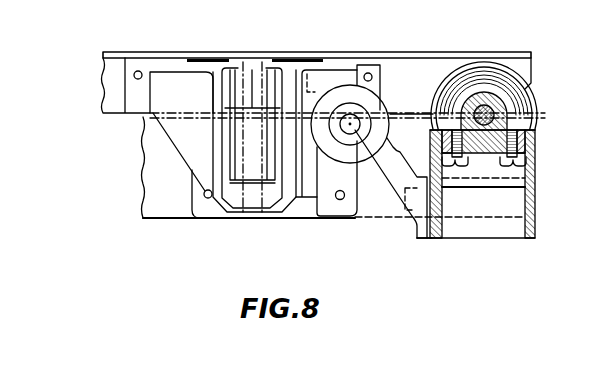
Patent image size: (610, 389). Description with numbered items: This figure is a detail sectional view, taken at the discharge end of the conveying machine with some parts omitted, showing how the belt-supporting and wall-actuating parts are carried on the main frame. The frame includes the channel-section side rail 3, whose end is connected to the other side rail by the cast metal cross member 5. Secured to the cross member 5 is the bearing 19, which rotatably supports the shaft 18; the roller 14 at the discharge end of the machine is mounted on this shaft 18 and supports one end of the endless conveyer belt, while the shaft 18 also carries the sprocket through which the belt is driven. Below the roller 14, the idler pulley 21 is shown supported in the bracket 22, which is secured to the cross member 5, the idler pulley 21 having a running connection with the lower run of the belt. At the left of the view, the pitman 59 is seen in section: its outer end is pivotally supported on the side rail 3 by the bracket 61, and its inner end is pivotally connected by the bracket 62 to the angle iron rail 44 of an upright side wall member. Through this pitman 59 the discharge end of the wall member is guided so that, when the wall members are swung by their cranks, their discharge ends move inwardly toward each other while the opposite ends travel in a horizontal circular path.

The angle iron rail 44 is at (112, 52).
The bracket 62 is at (213, 122).
The pitman 59 is at (243, 146).
The side rail 3 is at (157, 203).
The bracket 61 is at (314, 200).
The idler pulley 21 is at (342, 85).
The bracket 22 is at (393, 188).
The shaft 18 is at (481, 100).
The bearing 19 is at (492, 97).
The roller 14 is at (532, 68).
The cross member 5 is at (537, 204).